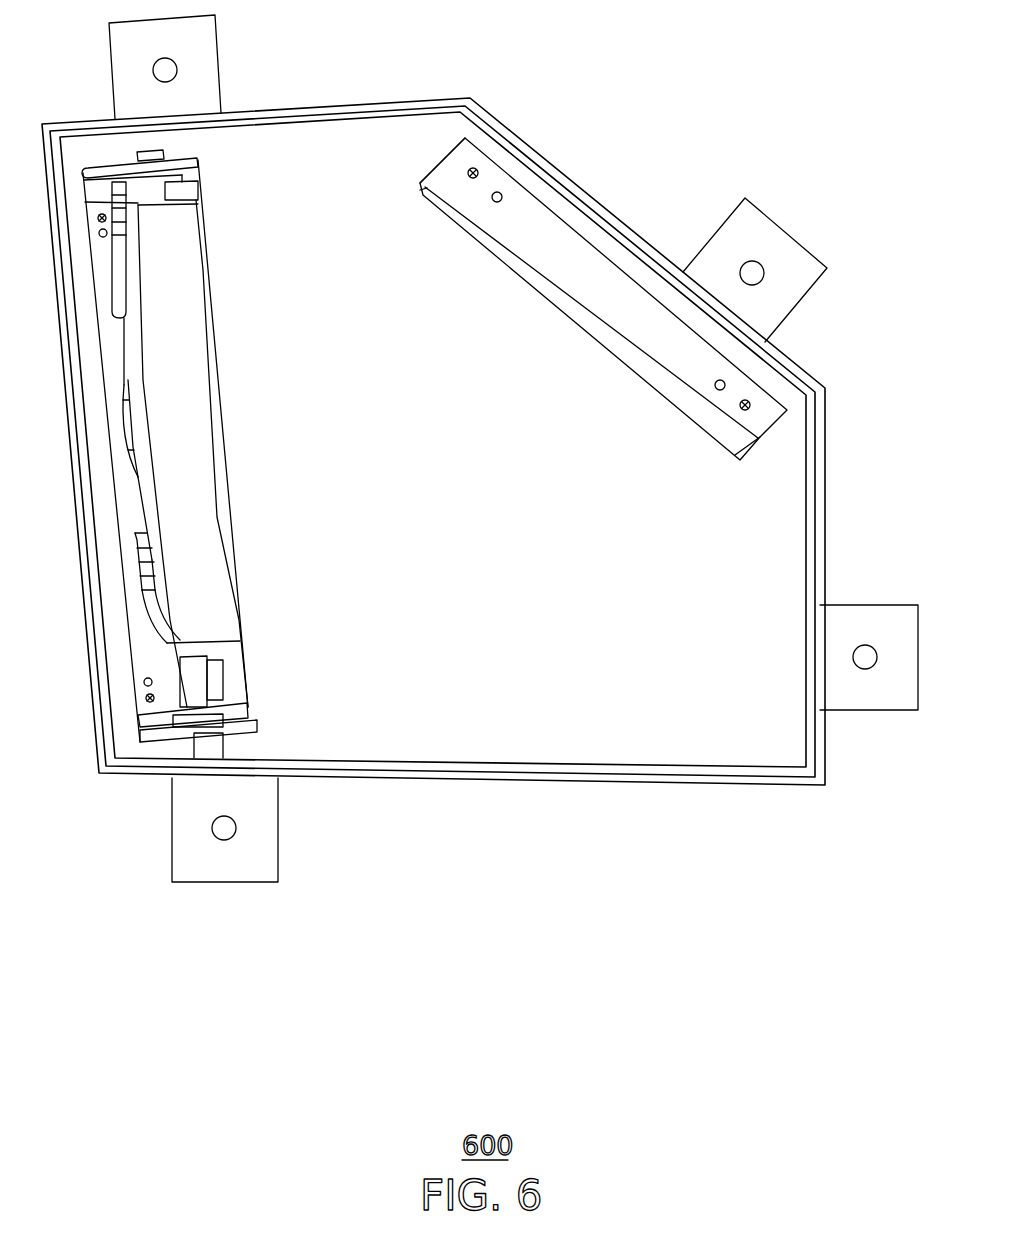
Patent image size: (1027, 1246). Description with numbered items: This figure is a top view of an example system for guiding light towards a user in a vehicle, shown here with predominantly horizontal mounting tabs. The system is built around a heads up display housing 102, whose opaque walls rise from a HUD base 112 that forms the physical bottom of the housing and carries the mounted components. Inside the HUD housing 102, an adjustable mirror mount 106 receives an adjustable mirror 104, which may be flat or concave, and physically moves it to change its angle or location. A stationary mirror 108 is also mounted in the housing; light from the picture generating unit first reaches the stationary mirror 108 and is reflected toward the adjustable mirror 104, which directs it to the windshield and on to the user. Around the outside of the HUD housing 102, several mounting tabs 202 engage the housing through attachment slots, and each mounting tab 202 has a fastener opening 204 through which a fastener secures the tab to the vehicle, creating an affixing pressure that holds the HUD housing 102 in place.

The HUD housing 102 is at (620, 786).
The adjustable mirror 104 is at (210, 455).
The adjustable mirror mount 106 is at (208, 302).
The stationary mirror 108 is at (553, 227).
The HUD base 112 is at (545, 578).
The mounting tab 202 is at (220, 52).
The fastener opening 204 is at (157, 63).